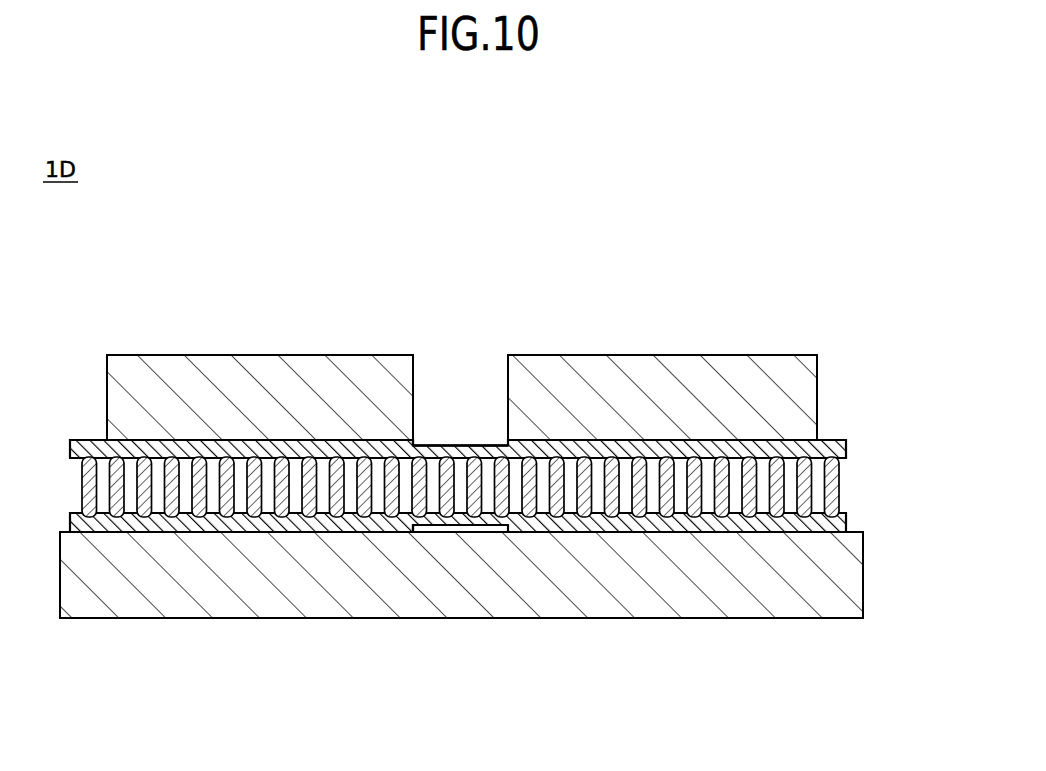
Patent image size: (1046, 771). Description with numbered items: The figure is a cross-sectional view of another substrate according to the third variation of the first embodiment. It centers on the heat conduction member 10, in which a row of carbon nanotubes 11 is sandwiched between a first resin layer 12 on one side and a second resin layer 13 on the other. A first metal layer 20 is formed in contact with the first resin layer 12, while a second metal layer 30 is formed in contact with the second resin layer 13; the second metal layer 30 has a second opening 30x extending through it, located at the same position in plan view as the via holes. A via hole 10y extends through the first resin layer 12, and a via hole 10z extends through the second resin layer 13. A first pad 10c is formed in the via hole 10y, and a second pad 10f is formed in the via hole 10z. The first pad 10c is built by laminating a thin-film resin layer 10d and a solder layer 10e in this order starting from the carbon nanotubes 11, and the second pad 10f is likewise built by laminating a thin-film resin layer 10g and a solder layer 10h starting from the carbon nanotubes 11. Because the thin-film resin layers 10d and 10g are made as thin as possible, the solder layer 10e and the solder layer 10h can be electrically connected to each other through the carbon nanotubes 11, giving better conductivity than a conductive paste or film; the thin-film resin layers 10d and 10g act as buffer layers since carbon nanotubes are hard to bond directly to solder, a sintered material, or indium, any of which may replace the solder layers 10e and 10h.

The heat conduction member 10 is at (901, 437).
The carbon nanotubes 11 is at (830, 486).
The first resin layer 12 is at (841, 520).
The second resin layer 13 is at (841, 457).
The first metal layer 20 is at (847, 573).
The second metal layer 30 is at (802, 397).
The second opening 30x is at (508, 418).
The first pad 10c is at (568, 703).
The thin-film resin layer 10d is at (467, 520).
The solder layer 10e is at (487, 524).
The second pad 10f is at (508, 198).
The thin-film resin layer 10g is at (452, 455).
The solder layer 10h is at (472, 445).
The via hole 10y is at (413, 528).
The via hole 10z is at (413, 444).